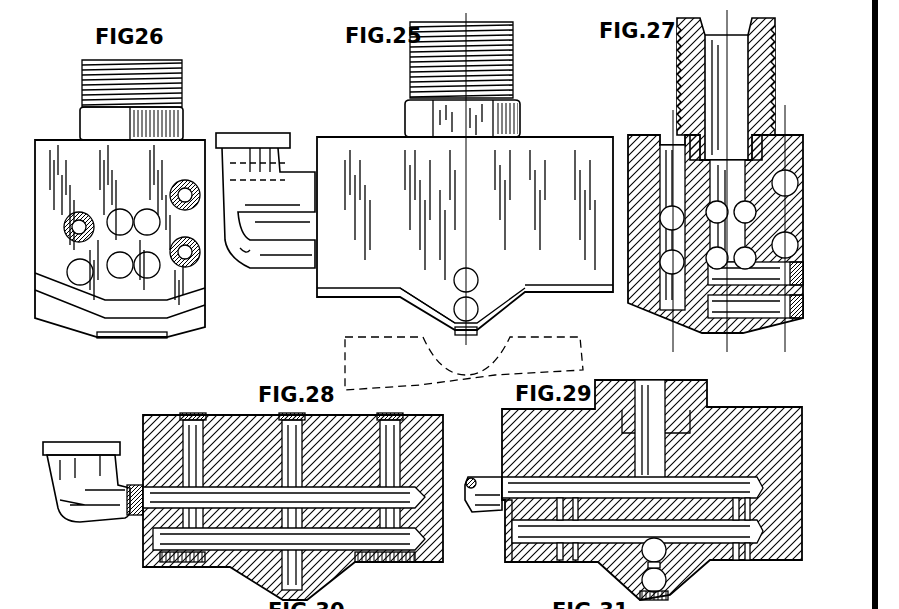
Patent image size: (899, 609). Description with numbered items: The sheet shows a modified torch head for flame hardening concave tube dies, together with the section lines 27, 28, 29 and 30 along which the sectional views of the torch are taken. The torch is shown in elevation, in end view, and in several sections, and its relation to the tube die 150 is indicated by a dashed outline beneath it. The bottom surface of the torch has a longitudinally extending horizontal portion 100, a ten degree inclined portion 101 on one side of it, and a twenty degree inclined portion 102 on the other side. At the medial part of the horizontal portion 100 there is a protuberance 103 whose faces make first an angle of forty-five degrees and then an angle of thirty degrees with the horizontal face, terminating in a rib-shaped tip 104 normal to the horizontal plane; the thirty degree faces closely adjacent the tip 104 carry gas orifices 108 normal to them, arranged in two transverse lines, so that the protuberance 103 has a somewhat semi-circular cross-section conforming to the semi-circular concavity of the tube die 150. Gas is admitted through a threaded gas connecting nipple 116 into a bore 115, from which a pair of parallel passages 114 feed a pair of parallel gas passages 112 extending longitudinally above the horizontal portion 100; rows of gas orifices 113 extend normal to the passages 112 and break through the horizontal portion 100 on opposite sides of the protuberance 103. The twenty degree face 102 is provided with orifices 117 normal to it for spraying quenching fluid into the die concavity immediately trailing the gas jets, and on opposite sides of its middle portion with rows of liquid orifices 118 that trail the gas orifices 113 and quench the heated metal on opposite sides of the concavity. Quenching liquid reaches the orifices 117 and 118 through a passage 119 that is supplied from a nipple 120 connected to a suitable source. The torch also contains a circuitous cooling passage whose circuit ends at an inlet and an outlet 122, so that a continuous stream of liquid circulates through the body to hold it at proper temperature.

In FIG. 25, the section line 27- 27 is at (467, 348).
In FIG. 27, the section line 28- 28 is at (667, 350).
In FIG. 27, the section line 29- 29 is at (734, 350).
In FIG. 27, the section line 30- 30 is at (792, 350).
In FIG. 26, the horizontal portion 100 is at (131, 338).
In FIG. 25, the horizontal portion 100 is at (582, 293).
In FIG. 27, the horizontal portion 100 is at (735, 335).
In FIG. 26, the 10 degree inclined portion 101 is at (192, 297).
In FIG. 25, the 10 degree inclined portion 101 is at (228, 320).
In FIG. 27, the 10 degree inclined portion 101 is at (803, 322).
In FIG. 26, the 20 degree inclined portion 102 is at (72, 288).
In FIG. 27, the 20 degree inclined portion 102 is at (646, 310).
In FIG. 25, the protuberance 103 is at (412, 300).
In FIG. 28, the protuberance 103 is at (338, 578).
In FIG. 29, the protuberance 103 is at (700, 575).
In FIG. 26, the rib-shaped tip 104 is at (105, 338).
In FIG. 25, the rib-shaped tip 104 is at (455, 331).
In FIG. 29, the rib-shaped tip 104 is at (668, 598).
In FIG. 29, the gas orifices 108 is at (772, 598).
In FIG. 29, the parallel gas passages 112 is at (540, 540).
In FIG. 29, the gas orifices 113 is at (560, 566).
In FIG. 29, the parallel passages 114 is at (515, 470).
In FIG. 27, the bore 115 is at (665, 140).
In FIG. 29, the bore 115 is at (660, 452).
In FIG. 27, the gas connecting nipple 116 is at (677, 52).
In FIG. 29, the gas connecting nipple 116 is at (636, 386).
In FIG. 28, the orifices 117 is at (260, 598).
In FIG. 28, the liquid orifices 118 is at (408, 562).
In FIG. 28, the passage 119 is at (160, 548).
In FIG. 28, the nipple 120 is at (75, 443).
In FIG. 28, the outlet 122 is at (103, 603).
In FIG. 25, the tube die 150 is at (345, 357).